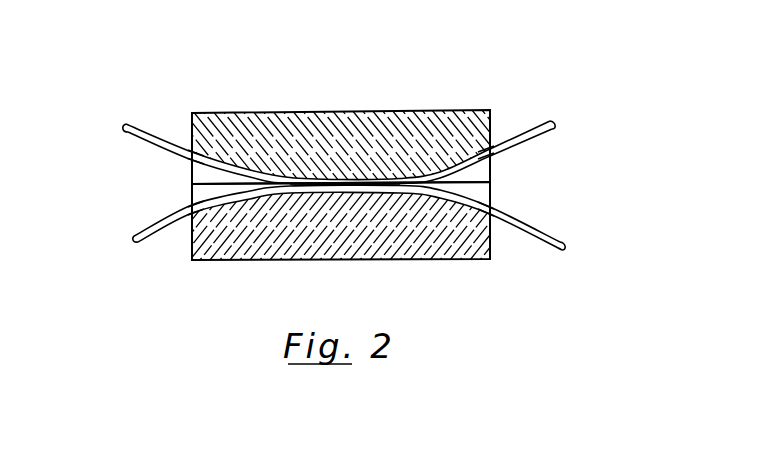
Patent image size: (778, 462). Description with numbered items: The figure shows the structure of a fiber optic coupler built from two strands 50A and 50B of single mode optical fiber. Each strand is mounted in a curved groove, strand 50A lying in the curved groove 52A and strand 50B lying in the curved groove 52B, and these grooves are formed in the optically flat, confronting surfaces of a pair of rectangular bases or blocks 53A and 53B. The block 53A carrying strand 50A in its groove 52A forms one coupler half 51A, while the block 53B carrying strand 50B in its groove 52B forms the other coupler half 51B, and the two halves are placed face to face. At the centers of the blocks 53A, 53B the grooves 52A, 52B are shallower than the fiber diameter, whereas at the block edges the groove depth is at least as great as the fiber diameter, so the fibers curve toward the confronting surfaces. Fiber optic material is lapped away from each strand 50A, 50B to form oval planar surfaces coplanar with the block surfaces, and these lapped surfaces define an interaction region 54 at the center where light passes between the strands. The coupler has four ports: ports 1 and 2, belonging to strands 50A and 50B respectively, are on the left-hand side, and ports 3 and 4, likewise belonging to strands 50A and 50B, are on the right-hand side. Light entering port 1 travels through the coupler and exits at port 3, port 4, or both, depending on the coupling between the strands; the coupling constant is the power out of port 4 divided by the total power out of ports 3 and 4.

The port 1 is at (124, 127).
The port 2 is at (135, 240).
The port 3 is at (556, 125).
The port 4 is at (563, 247).
The strand 50A is at (345, 130).
The strand 50B is at (347, 235).
The coupler half 51A is at (337, 100).
The coupler half 51B is at (336, 256).
The curved groove 52A is at (190, 160).
The curved groove 52B is at (192, 208).
The block 53A is at (346, 112).
The block 53B is at (296, 243).
The interaction region 54 is at (277, 168).